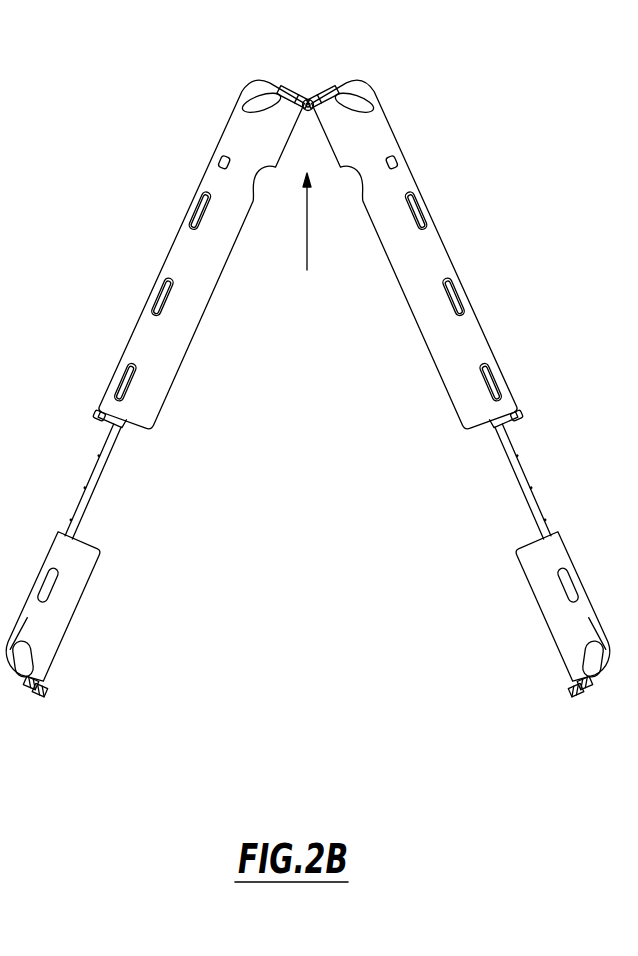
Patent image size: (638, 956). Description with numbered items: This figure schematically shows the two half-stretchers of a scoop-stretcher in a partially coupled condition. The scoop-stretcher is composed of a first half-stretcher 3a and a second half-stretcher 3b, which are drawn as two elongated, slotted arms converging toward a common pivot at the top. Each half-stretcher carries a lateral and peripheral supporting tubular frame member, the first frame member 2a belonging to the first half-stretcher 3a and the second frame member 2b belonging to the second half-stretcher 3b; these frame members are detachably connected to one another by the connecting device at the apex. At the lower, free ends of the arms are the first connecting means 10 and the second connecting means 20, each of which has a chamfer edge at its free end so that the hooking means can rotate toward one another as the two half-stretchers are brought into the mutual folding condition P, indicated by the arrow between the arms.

The first tubular frame member 2a is at (333, 92).
The second tubular frame member 2b is at (283, 92).
The first half-stretcher 3a is at (433, 253).
The second half-stretcher 3b is at (182, 252).
The first connecting means 10 is at (568, 709).
The second connecting means 20 is at (46, 701).
The mutual folding condition P is at (301, 241).